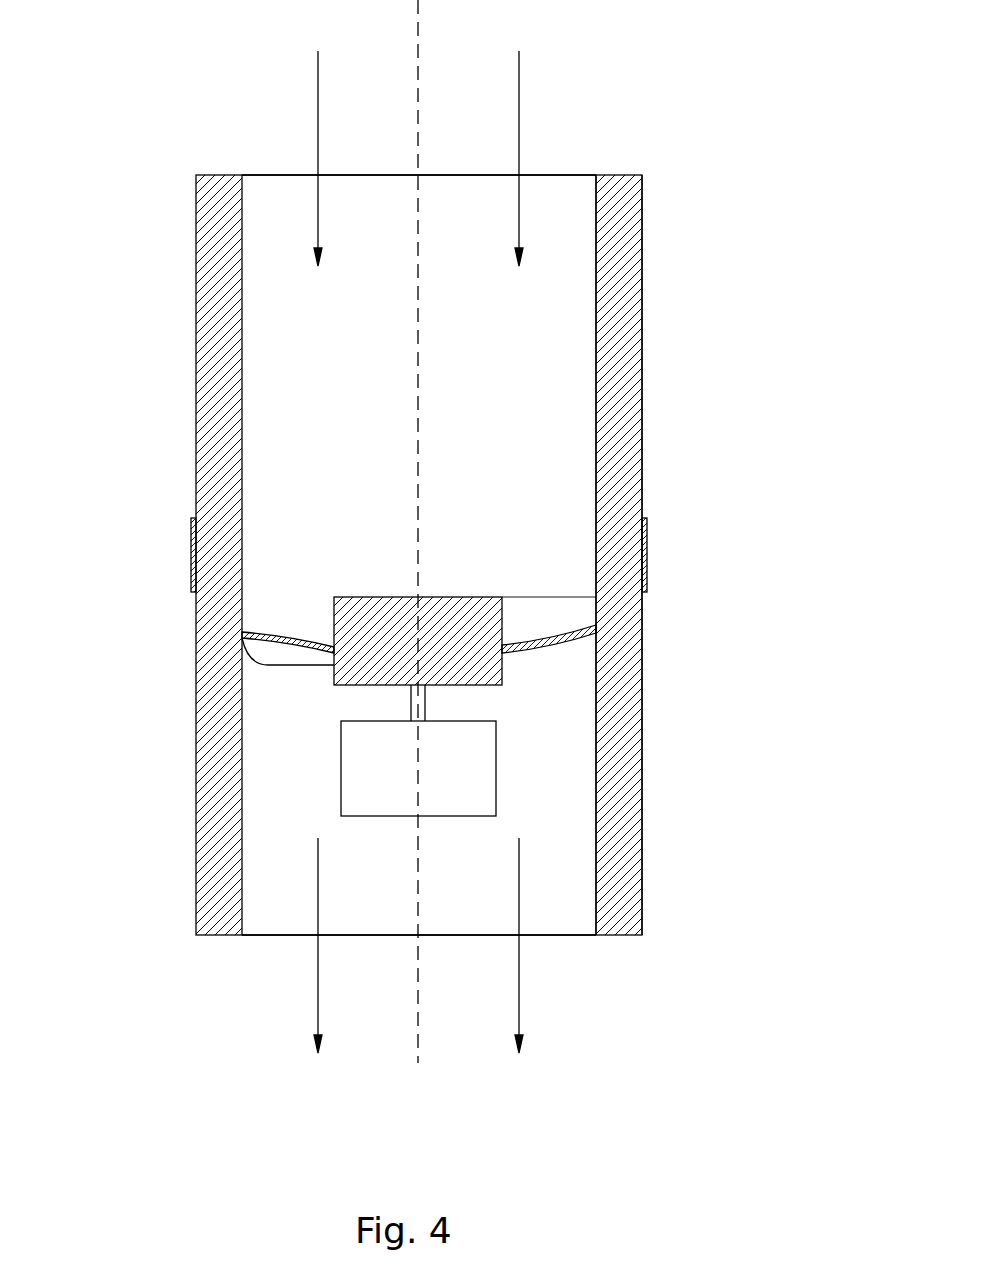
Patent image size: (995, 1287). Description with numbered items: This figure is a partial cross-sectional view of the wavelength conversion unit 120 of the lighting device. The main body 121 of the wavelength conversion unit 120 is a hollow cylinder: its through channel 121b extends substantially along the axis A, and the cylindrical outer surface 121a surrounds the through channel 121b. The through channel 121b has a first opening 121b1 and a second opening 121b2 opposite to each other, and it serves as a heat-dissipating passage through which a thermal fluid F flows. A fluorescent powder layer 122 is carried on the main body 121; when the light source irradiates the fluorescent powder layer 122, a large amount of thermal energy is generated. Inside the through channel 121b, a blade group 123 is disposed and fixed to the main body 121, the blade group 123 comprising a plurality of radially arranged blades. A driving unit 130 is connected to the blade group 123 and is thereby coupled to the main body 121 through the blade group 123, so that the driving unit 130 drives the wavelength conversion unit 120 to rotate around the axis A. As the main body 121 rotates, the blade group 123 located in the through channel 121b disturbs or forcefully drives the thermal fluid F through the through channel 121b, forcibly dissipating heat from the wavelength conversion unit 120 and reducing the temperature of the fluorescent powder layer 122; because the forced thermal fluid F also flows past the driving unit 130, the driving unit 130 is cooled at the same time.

The wavelength conversion unit 120 is at (148, 147).
The main body 121 is at (617, 300).
The cylindrical outer surface 121a is at (642, 357).
The through channel 121b is at (608, 473).
The first opening 121b1 is at (567, 162).
The second opening 121b2 is at (567, 945).
The fluorescent powder layer 122 is at (647, 558).
The blade group 123 is at (495, 672).
The driving unit 130 is at (496, 773).
The axis A is at (418, 12).
The thermal fluid F is at (318, 107).